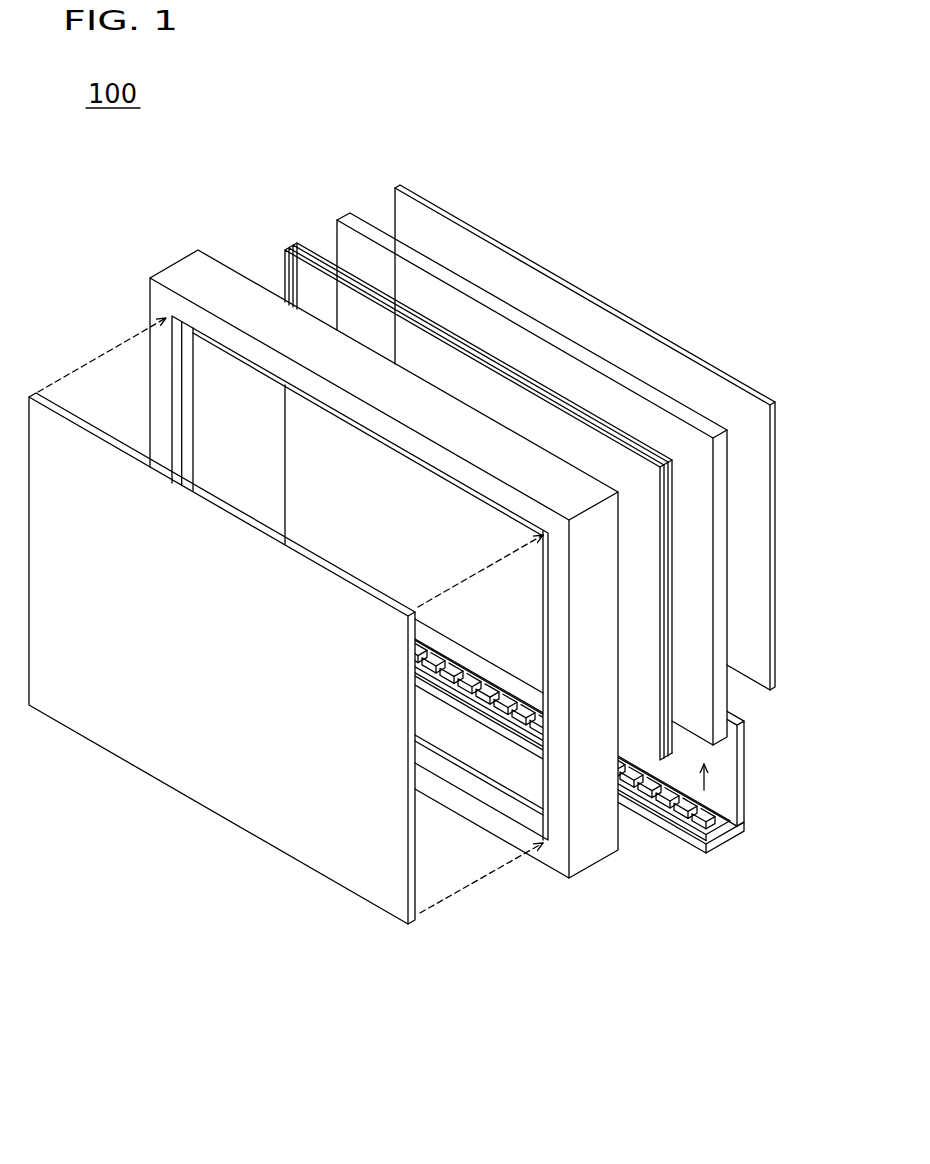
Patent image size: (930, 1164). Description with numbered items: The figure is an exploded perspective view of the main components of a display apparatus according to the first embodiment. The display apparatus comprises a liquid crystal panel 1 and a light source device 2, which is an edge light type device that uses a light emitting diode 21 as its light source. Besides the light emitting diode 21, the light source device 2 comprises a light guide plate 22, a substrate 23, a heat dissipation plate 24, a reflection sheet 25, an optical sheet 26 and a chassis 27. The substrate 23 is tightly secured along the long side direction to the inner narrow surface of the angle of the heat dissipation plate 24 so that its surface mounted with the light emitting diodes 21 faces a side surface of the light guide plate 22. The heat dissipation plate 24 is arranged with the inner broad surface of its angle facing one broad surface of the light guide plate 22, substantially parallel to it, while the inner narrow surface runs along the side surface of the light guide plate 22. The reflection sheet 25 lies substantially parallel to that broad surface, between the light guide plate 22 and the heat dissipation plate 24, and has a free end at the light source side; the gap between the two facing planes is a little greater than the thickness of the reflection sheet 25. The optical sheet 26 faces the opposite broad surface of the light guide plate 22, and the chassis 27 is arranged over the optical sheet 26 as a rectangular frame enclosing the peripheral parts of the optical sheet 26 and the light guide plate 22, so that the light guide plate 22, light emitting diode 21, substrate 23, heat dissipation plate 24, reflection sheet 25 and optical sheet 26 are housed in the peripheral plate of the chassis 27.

The liquid crystal panel 1 is at (277, 825).
The light source device 2 is at (602, 765).
The light emitting diode 21 is at (559, 757).
The light guide plate 22 is at (722, 700).
The substrate 23 is at (694, 835).
The heat dissipation plate 24 is at (728, 838).
The reflection sheet 25 is at (775, 490).
The optical sheet 26 is at (647, 737).
The chassis 27 is at (560, 858).